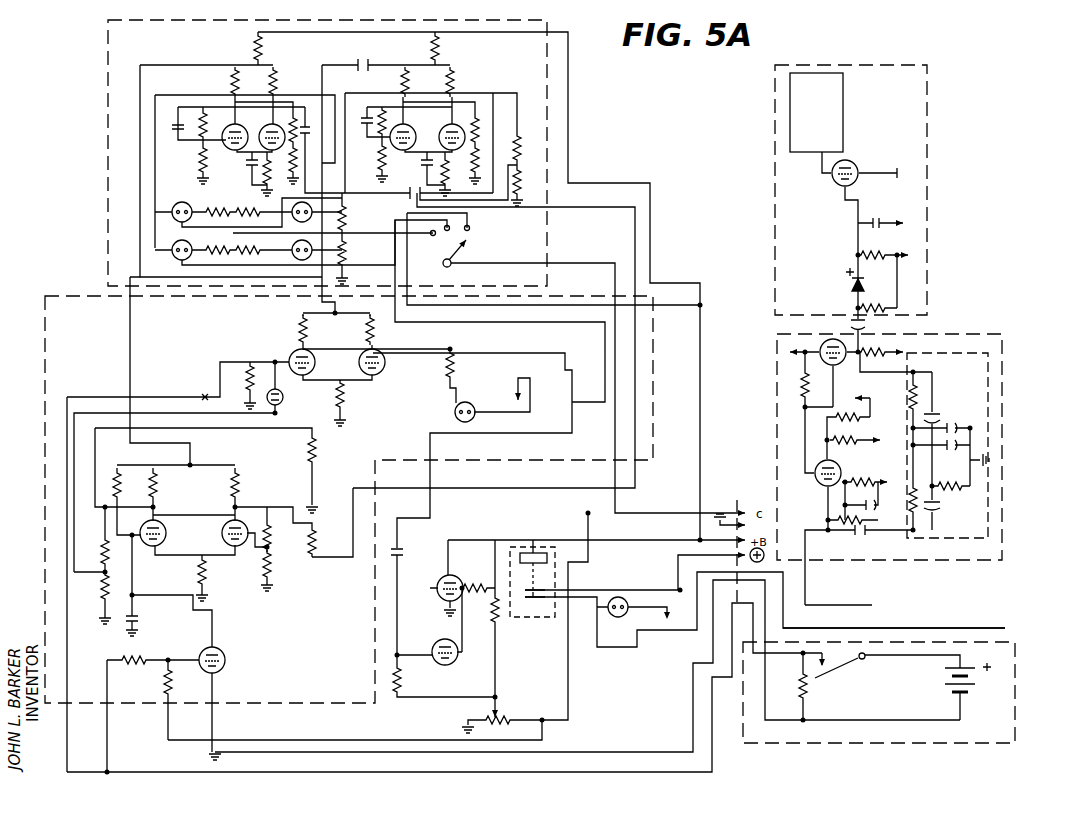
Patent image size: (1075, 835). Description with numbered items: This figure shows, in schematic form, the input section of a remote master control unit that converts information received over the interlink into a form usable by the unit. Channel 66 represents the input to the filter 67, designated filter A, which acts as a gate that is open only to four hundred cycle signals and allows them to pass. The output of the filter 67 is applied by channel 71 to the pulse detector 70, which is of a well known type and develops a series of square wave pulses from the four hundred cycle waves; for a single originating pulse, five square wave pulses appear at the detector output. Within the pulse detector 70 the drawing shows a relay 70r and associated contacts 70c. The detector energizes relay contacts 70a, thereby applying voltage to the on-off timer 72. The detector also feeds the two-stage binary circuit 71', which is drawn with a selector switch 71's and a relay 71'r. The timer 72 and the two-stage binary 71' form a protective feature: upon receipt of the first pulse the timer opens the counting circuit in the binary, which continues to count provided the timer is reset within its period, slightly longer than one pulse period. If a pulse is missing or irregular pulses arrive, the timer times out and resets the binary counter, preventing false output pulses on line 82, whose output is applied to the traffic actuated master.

The two-stage binary circuit 71' is at (381, 168).
The selector switch 71's is at (478, 252).
The relay 71'r is at (532, 600).
The on-off timer 72 is at (45, 377).
The pulse detector 70 is at (927, 130).
The relay 70r is at (843, 118).
The channel 71 is at (873, 330).
The filter 67 is at (1002, 549).
The channel 66 is at (848, 606).
The line 82 is at (943, 633).
The relay contacts 70a is at (1015, 687).
The contact switch 70c is at (820, 672).